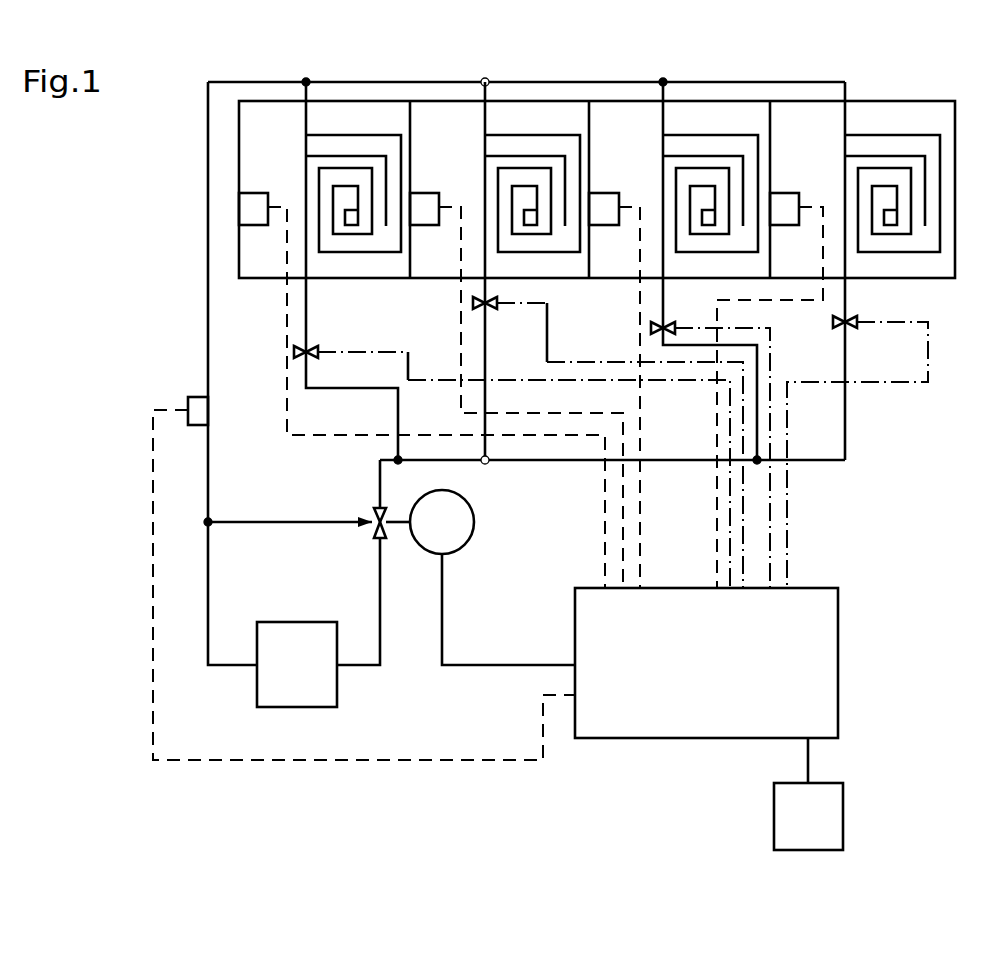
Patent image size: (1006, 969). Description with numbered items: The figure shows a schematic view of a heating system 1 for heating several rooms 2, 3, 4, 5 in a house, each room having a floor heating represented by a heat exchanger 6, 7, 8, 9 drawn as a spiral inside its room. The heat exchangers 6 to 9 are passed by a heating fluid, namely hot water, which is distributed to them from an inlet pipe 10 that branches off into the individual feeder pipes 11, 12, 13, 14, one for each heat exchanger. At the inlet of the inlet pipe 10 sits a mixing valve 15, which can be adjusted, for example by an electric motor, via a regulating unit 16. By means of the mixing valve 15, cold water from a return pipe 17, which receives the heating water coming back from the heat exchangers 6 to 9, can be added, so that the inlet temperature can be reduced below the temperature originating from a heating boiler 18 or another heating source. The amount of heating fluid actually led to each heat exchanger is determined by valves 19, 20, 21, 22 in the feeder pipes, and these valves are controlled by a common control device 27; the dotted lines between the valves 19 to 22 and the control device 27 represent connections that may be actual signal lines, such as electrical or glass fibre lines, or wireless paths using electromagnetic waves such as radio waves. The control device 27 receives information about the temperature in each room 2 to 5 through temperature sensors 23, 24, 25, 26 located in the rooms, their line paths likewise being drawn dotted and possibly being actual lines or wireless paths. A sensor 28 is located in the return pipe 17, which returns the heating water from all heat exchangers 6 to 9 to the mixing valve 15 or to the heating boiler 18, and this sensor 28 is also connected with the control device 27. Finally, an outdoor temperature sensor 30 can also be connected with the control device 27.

The heating system 1 is at (968, 160).
The room 2 is at (334, 268).
The room 3 is at (566, 270).
The room 4 is at (680, 270).
The room 5 is at (955, 258).
The heat exchanger 6 is at (352, 133).
The heat exchanger 7 is at (543, 133).
The heat exchanger 8 is at (704, 133).
The heat exchanger 9 is at (889, 133).
The inlet pipe 10 is at (560, 462).
The feeder pipe 11 is at (304, 318).
The feeder pipe 12 is at (479, 341).
The feeder pipe 13 is at (697, 348).
The feeder pipe 14 is at (847, 430).
The mixing valve 15 is at (373, 512).
The regulating unit 16 is at (465, 530).
The return pipe 17 is at (208, 497).
The heating boiler 18 is at (308, 697).
The valve 19 is at (303, 360).
The valve 20 is at (486, 306).
The valve 21 is at (657, 328).
The valve 22 is at (851, 326).
The temperature sensor 23 is at (247, 213).
The temperature sensor 24 is at (421, 198).
The temperature sensor 25 is at (603, 203).
The temperature sensor 26 is at (787, 198).
The control device 27 is at (830, 722).
The sensor 28 is at (193, 405).
The outdoor temperature sensor 30 is at (835, 818).